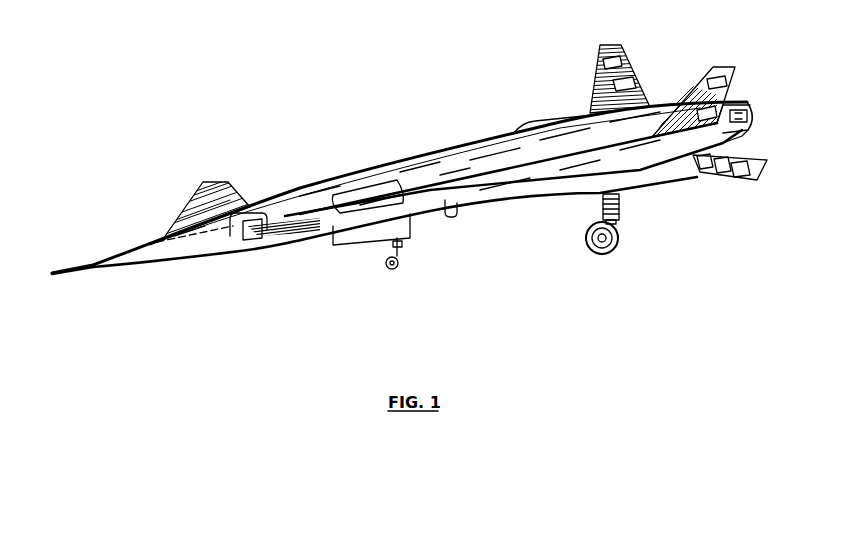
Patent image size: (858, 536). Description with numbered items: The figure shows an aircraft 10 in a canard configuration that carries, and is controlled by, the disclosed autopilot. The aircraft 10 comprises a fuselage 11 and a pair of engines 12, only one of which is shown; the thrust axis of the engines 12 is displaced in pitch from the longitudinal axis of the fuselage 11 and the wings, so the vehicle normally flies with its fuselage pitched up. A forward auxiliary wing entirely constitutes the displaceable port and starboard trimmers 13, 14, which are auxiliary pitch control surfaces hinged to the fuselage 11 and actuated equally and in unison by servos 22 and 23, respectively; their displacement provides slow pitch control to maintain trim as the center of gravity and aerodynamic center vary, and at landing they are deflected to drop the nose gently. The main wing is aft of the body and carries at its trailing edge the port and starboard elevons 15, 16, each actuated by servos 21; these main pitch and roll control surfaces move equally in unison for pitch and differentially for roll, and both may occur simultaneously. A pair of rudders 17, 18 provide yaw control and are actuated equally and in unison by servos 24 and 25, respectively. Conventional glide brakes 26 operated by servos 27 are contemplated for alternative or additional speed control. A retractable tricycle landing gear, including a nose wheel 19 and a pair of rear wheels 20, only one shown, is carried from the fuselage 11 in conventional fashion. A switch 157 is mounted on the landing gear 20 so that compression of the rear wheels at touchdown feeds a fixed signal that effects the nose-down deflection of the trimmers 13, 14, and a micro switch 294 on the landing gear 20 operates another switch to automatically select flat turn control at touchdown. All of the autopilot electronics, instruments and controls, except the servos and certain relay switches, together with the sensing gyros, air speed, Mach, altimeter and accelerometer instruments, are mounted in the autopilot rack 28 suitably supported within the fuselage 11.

The aircraft 10 is at (408, 150).
The fuselage 11 is at (355, 176).
The engine 12 is at (482, 214).
The port trimmer 13 is at (301, 236).
The starboard trimmer 14 is at (227, 195).
The port elevon 15 is at (767, 159).
The starboard elevon 16 is at (575, 117).
The rudder 17 is at (731, 67).
The rudder 18 is at (619, 46).
The nose wheel 19 is at (400, 263).
The rear wheel 20 is at (619, 238).
The elevon servo 21 is at (724, 174).
The port trimmer servo 22 is at (250, 241).
The starboard trimmer servo 23 is at (227, 236).
The rudder servo 24 is at (727, 92).
The rudder servo 25 is at (633, 73).
The glide brake 26 is at (749, 110).
The glide brake servo 27 is at (755, 128).
The autopilot rack 28 is at (367, 196).
The switch 157 is at (600, 208).
The micro switch 294 is at (621, 210).